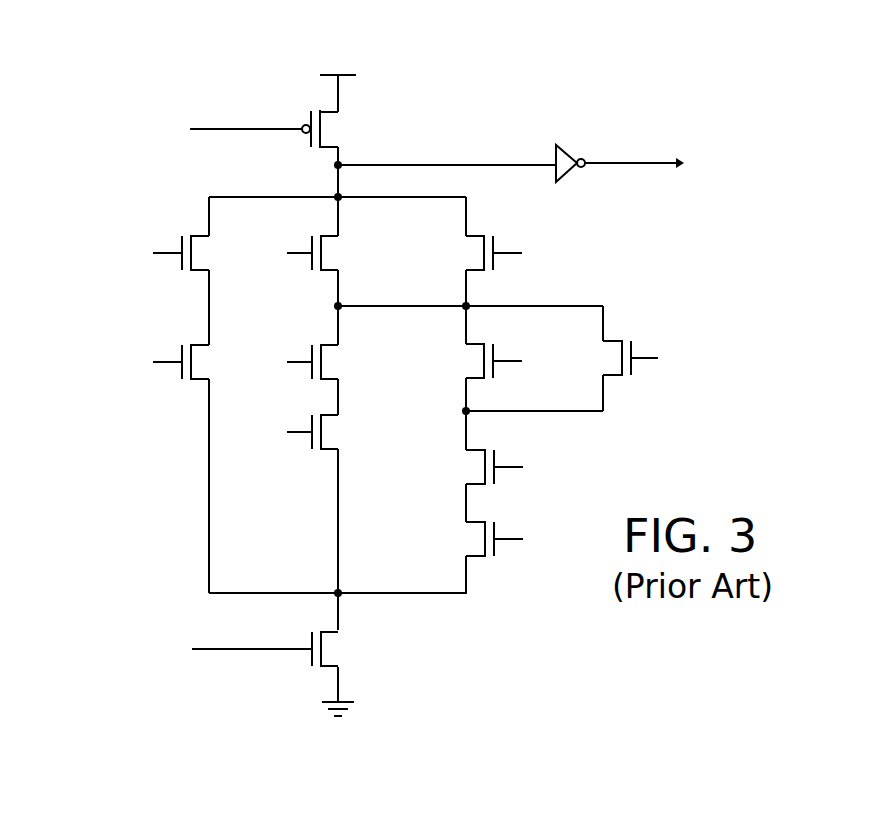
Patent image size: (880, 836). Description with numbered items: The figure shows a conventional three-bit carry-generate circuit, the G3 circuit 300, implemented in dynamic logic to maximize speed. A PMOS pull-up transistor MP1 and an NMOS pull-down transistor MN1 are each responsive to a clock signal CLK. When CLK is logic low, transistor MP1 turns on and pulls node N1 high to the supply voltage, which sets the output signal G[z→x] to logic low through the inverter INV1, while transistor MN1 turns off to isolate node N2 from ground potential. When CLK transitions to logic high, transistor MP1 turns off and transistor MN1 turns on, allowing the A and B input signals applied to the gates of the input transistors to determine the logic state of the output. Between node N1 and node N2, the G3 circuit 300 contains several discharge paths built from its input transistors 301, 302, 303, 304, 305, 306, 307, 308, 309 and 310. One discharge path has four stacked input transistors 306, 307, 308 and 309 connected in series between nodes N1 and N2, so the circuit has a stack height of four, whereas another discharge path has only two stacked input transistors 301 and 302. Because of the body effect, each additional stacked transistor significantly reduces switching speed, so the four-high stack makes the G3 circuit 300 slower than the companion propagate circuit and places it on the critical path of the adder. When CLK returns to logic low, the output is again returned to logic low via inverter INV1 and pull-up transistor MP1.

The G3 circuit 300 is at (165, 55).
The stacked input transistor 301 is at (203, 252).
The stacked input transistor 302 is at (203, 361).
The input transistor 303 is at (330, 253).
The input transistor 304 is at (330, 359).
The input transistor 305 is at (332, 432).
The stacked input transistor 306 is at (476, 252).
The stacked input transistor 307 is at (476, 358).
The stacked input transistor 308 is at (478, 472).
The stacked input transistor 309 is at (478, 542).
The input transistor 310 is at (607, 358).
The PMOS pull-up transistor MP1 is at (332, 128).
The NMOS pull-down transistor MN1 is at (339, 647).
The node N1 is at (343, 158).
The node N2 is at (333, 600).
The inverter INV1 is at (572, 150).